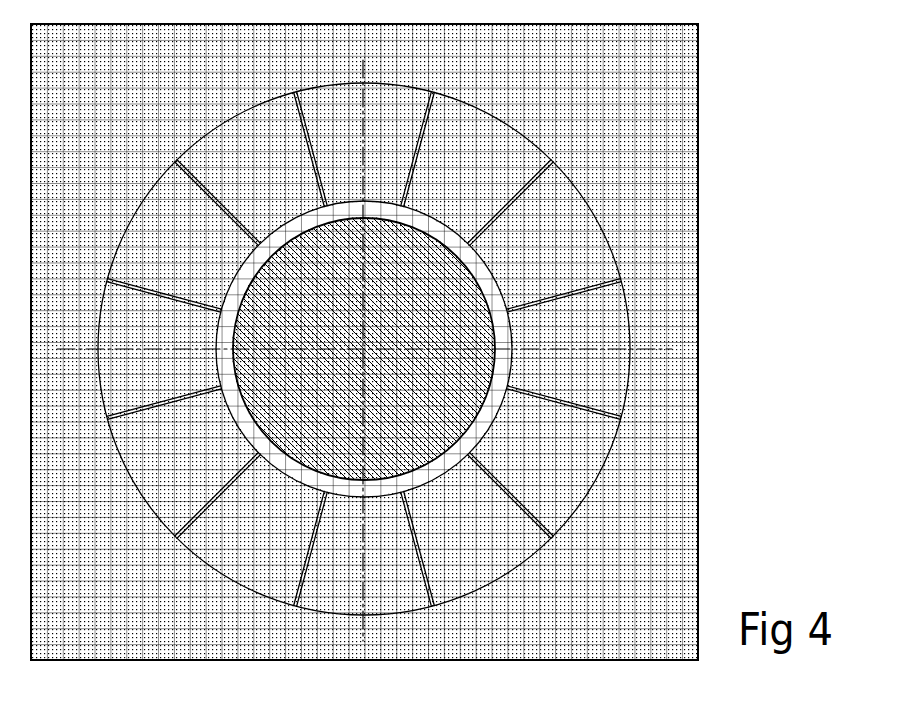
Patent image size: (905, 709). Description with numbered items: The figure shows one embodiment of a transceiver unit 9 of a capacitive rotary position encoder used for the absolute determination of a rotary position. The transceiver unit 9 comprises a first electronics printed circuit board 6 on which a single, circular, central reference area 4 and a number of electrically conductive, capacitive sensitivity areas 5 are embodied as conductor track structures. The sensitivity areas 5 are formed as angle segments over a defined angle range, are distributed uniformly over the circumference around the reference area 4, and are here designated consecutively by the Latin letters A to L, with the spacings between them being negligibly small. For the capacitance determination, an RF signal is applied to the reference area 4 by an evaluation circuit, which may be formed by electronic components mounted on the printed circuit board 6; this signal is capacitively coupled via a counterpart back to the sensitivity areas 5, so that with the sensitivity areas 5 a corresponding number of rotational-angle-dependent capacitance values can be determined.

The transceiver unit 9 is at (710, 58).
The first electronics printed circuit board 6 is at (650, 148).
The sensitivity areas 5 is at (560, 213).
The reference area 4 is at (465, 318).